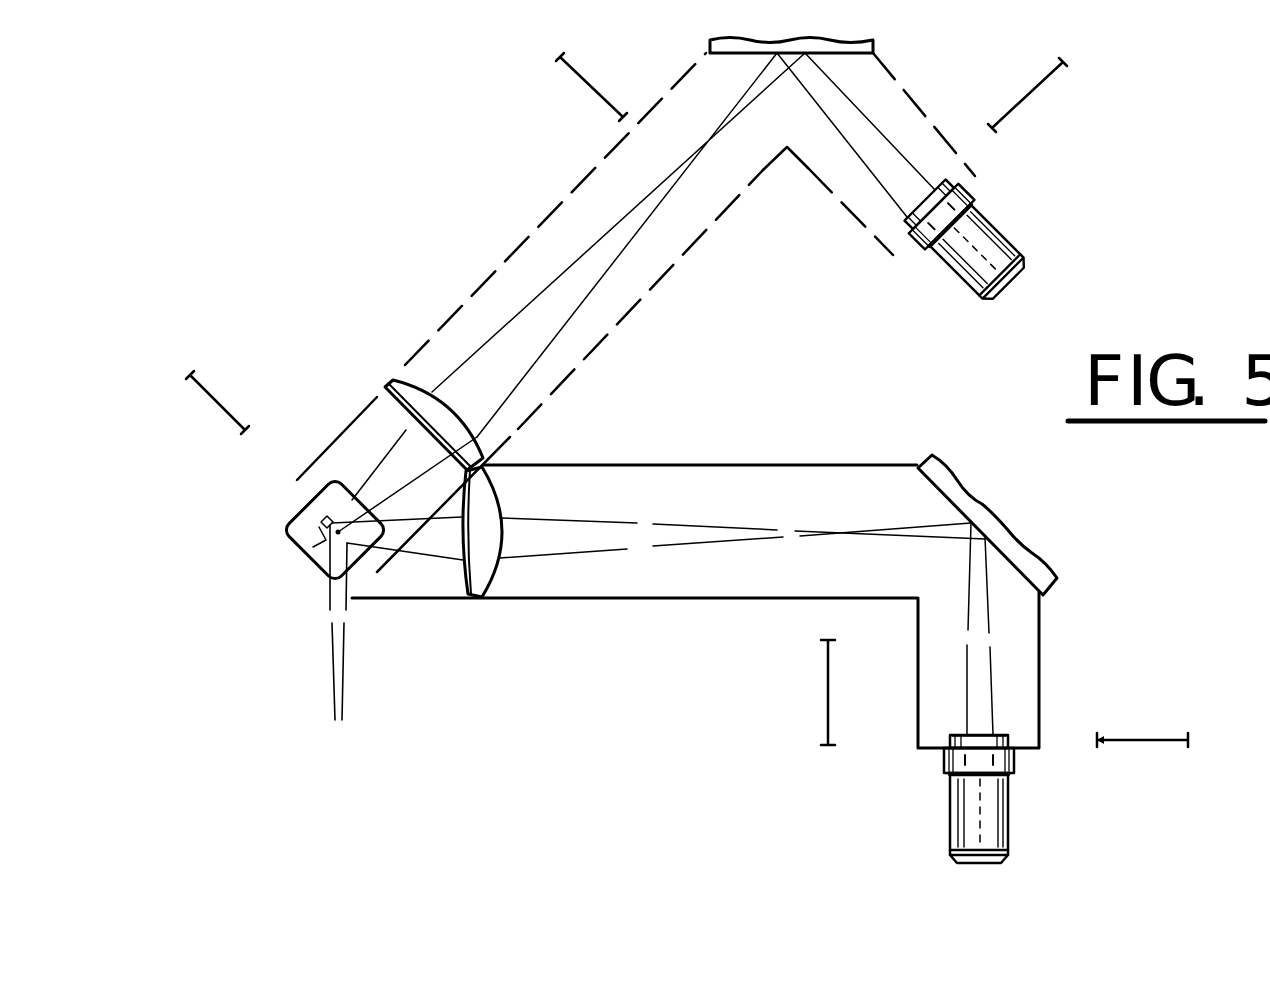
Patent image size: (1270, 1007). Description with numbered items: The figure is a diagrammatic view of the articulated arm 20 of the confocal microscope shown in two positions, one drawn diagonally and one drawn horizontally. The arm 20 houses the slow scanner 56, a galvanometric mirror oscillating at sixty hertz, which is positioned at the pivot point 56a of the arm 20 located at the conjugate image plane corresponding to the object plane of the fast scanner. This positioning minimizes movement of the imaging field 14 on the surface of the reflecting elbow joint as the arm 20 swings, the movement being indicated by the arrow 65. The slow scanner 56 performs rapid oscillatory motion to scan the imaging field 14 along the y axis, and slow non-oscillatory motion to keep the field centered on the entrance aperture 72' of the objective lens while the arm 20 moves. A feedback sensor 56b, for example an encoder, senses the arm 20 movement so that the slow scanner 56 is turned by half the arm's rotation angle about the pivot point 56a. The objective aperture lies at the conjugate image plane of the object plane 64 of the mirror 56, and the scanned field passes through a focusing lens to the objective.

The imaging field 14 is at (375, 622).
The articulated arm 20 is at (668, 632).
The slow scanner 56 is at (296, 556).
The pivot point 56a is at (285, 535).
The feedback sensor 56b is at (305, 511).
The object plane 64 is at (222, 401).
The arrow 65 is at (586, 374).
The entrance aperture 72' is at (1024, 762).